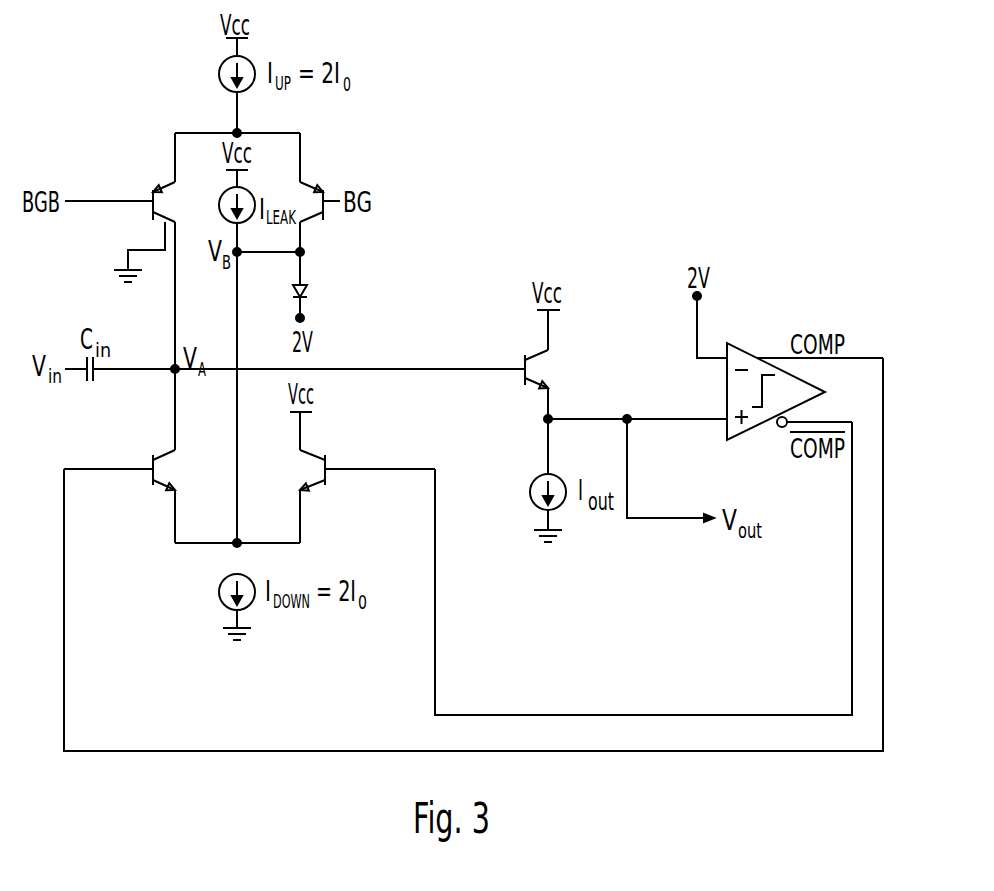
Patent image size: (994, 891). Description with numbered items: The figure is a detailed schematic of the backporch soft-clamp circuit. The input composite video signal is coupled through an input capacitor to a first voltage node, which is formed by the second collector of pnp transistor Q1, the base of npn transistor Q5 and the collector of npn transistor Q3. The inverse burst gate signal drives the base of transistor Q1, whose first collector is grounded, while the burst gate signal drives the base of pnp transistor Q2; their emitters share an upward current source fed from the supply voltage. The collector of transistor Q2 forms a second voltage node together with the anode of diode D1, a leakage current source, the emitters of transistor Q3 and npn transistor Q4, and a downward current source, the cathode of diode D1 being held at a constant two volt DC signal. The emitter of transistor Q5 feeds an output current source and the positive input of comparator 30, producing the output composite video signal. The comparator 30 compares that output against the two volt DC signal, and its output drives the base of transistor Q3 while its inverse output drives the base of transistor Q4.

The comparator 30 is at (747, 345).
The pnp transistor Q1 is at (120, 189).
The pnp transistor Q2 is at (320, 188).
The npn transistor Q3 is at (158, 455).
The npn transistor Q4 is at (316, 456).
The npn transistor Q5 is at (532, 354).
The diode D1 is at (316, 297).